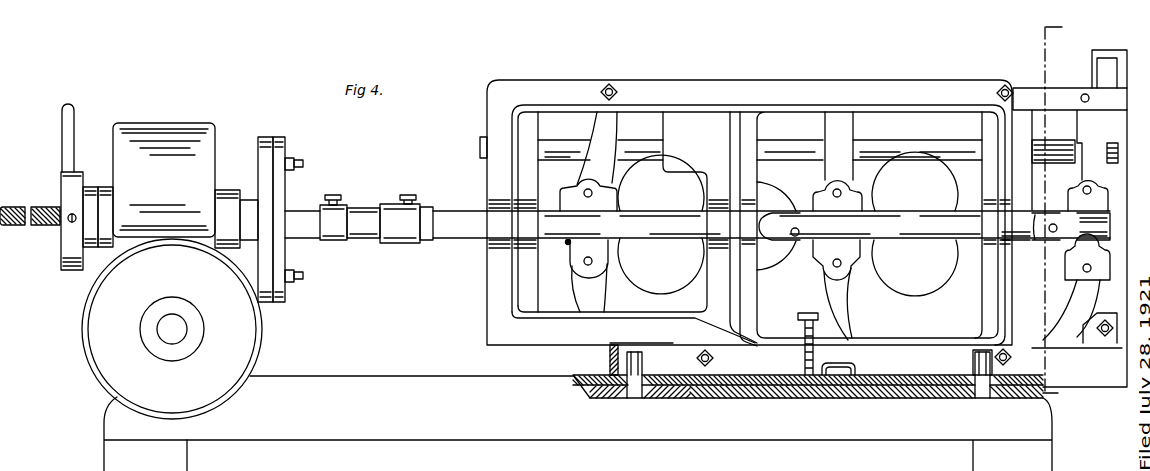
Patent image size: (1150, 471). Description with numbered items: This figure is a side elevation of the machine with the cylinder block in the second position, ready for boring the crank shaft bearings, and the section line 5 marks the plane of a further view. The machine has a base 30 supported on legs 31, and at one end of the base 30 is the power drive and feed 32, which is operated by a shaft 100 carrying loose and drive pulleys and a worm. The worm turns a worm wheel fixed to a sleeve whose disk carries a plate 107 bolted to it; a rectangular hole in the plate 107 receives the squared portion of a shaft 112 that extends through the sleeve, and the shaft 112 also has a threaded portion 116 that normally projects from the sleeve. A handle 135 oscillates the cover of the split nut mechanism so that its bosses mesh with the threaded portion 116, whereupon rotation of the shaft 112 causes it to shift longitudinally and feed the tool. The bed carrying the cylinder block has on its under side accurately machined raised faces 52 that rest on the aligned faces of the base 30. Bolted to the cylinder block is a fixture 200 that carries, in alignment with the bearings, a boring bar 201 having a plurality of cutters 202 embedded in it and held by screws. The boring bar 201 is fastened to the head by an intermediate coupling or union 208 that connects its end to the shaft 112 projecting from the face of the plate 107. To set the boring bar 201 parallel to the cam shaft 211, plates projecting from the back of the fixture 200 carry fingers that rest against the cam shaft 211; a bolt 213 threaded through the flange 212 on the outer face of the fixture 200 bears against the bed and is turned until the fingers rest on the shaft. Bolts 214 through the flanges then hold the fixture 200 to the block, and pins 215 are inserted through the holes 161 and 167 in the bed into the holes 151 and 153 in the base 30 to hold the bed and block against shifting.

The section line 5- 5 is at (1057, 213).
The base 30 is at (578, 423).
The legs 31 is at (162, 455).
The power drive and feed 32 is at (167, 123).
The raised faces 52 is at (843, 375).
The shaft 100 is at (172, 328).
The plate 107 is at (283, 142).
The shaft 112 is at (302, 213).
The threaded portion 116 is at (17, 233).
The handle 135 is at (68, 130).
The hole 151 is at (642, 398).
The hole 153 is at (977, 387).
The hole 161 is at (610, 372).
The hole 167 is at (975, 378).
The fixture 200 is at (542, 90).
The boring bar 201 is at (660, 245).
The cutters 202 is at (796, 212).
The coupling or union 208 is at (358, 210).
The cam shaft 211 is at (893, 138).
The flange 212 is at (808, 108).
The bolt 213 is at (802, 327).
The bolts 214 is at (614, 88).
The pins 215 is at (633, 388).